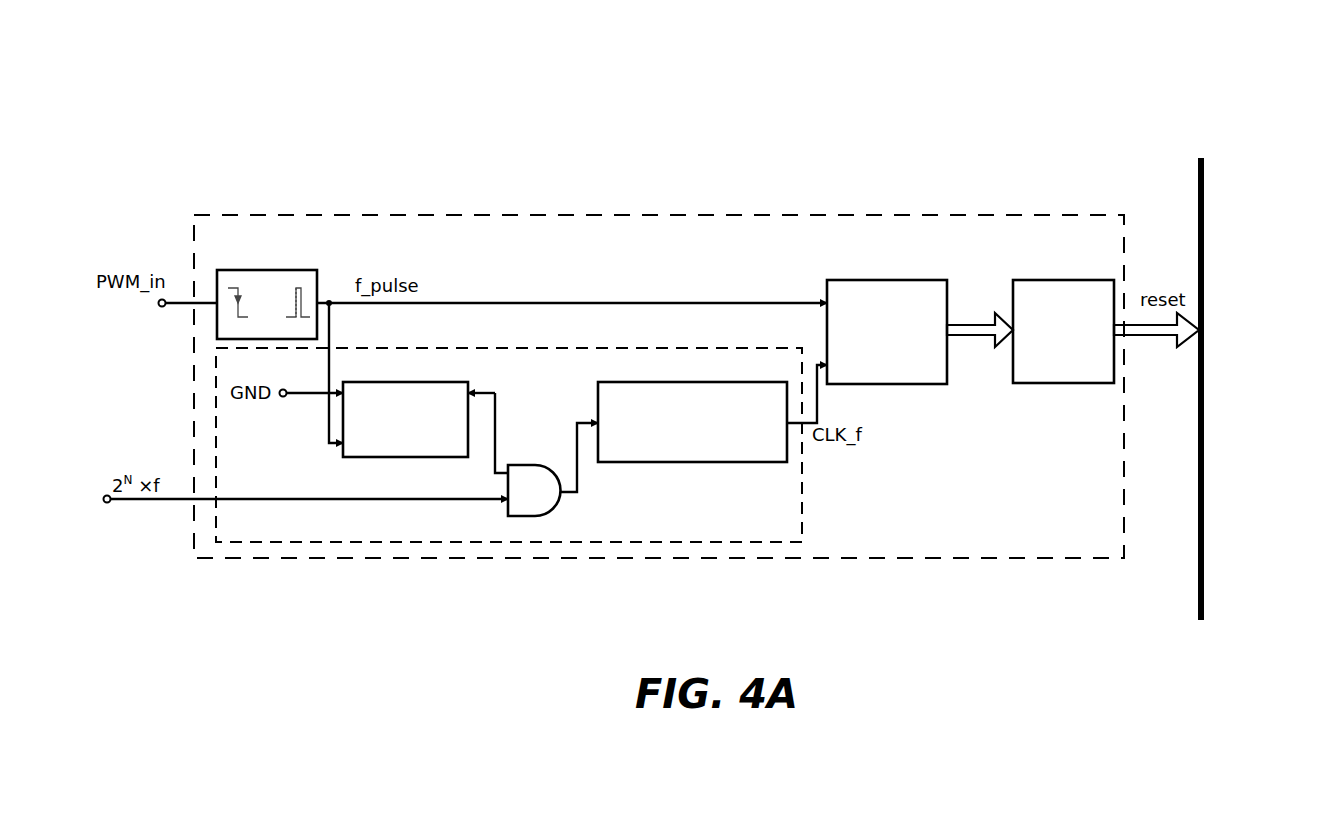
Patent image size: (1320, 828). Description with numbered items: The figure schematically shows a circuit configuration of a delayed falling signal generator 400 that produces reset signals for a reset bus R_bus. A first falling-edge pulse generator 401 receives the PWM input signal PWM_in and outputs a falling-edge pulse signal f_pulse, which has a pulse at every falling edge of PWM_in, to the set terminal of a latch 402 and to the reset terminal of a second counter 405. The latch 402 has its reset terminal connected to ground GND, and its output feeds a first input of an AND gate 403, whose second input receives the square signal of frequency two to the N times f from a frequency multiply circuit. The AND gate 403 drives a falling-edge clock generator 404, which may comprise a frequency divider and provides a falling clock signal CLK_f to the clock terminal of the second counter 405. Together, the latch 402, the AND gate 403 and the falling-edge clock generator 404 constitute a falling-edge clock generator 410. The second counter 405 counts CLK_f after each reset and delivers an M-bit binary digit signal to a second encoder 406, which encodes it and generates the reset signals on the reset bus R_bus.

The PWM-to-reset circuit with R_bus 400 is at (1222, 153).
The first falling-edge pulse generator 401 is at (285, 270).
The latch 402 is at (395, 382).
The AND gate 403 is at (545, 516).
The falling-edge clock generator 404 is at (650, 382).
The second counter 405 is at (870, 280).
The second encoder 406 is at (1035, 280).
The falling-edge clock generator 410 is at (805, 515).